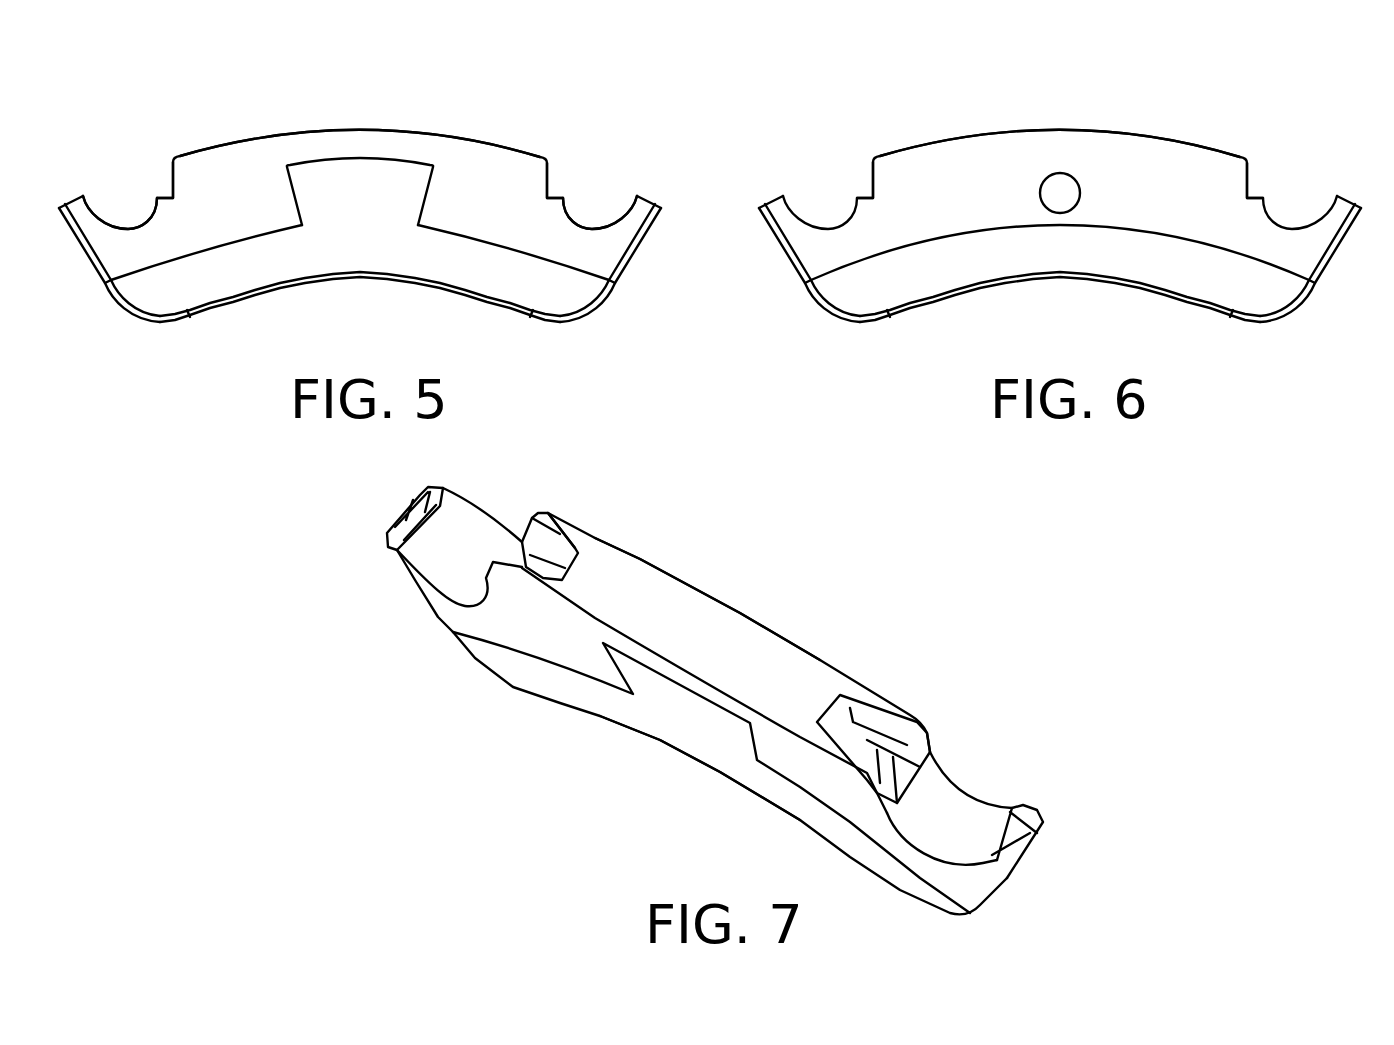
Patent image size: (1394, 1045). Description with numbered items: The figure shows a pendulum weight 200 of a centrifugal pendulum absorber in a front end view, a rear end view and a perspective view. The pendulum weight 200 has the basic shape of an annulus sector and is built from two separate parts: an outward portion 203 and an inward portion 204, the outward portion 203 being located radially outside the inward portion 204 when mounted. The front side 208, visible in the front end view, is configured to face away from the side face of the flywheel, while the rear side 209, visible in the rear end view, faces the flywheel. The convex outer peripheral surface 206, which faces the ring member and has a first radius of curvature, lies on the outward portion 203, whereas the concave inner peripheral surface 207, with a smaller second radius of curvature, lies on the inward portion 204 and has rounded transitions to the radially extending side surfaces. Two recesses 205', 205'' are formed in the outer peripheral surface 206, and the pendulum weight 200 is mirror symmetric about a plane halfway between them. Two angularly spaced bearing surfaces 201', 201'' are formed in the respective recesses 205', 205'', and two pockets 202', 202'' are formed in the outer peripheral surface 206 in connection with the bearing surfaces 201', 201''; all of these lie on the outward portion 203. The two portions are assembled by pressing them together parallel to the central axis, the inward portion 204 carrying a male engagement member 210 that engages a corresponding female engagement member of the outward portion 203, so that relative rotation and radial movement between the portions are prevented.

In FIG. 5, the pendulum weight 200 is at (214, 104).
In FIG. 6, the pendulum weight 200 is at (914, 104).
In FIG. 7, the pendulum weight 200 is at (833, 603).
In FIG. 5, the bearing surface 201' is at (99, 182).
In FIG. 7, the bearing surface 201' is at (469, 524).
In FIG. 5, the bearing surface 201'' is at (623, 183).
In FIG. 7, the bearing surface 201'' is at (973, 796).
In FIG. 7, the pocket 202' is at (577, 526).
In FIG. 7, the pocket 202'' is at (902, 730).
In FIG. 5, the outward portion 203 is at (483, 181).
In FIG. 6, the outward portion 203 is at (1183, 181).
In FIG. 5, the inward portion 204 is at (505, 272).
In FIG. 6, the inward portion 204 is at (1205, 272).
In FIG. 5, the recess 205' is at (120, 154).
In FIG. 6, the recess 205' is at (1299, 155).
In FIG. 5, the recess 205'' is at (602, 154).
In FIG. 6, the recess 205'' is at (816, 155).
In FIG. 5, the outer peripheral surface 206 is at (358, 130).
In FIG. 6, the outer peripheral surface 206 is at (1058, 132).
In FIG. 7, the outer peripheral surface 206 is at (706, 637).
In FIG. 5, the inner peripheral surface 207 is at (360, 288).
In FIG. 6, the inner peripheral surface 207 is at (1060, 288).
In FIG. 7, the inner peripheral surface 207 is at (684, 755).
In FIG. 5, the front side 208 is at (380, 251).
In FIG. 6, the rear side 209 is at (1082, 264).
In FIG. 5, the male engagement member 210 is at (354, 195).
In FIG. 6, the male engagement member 210 is at (1058, 192).